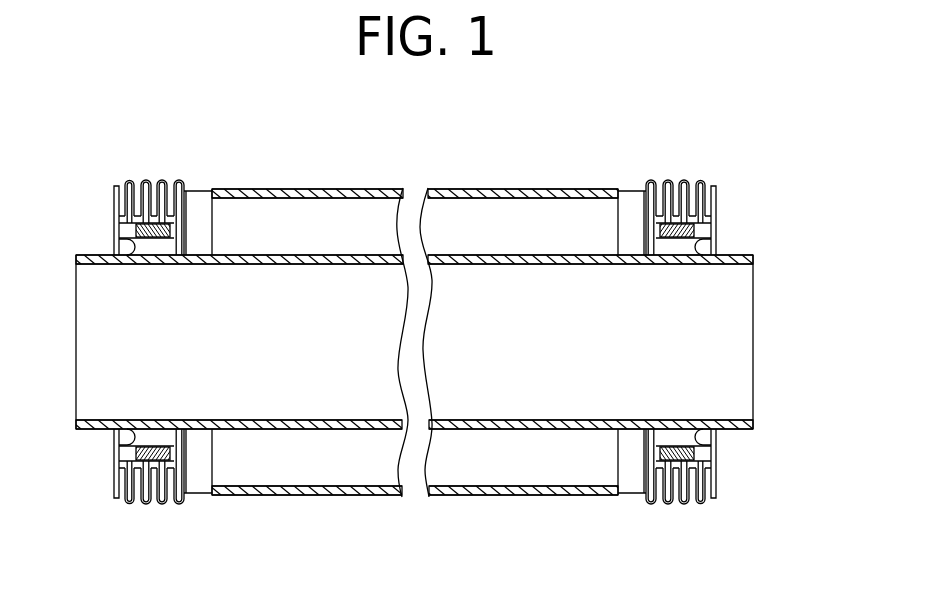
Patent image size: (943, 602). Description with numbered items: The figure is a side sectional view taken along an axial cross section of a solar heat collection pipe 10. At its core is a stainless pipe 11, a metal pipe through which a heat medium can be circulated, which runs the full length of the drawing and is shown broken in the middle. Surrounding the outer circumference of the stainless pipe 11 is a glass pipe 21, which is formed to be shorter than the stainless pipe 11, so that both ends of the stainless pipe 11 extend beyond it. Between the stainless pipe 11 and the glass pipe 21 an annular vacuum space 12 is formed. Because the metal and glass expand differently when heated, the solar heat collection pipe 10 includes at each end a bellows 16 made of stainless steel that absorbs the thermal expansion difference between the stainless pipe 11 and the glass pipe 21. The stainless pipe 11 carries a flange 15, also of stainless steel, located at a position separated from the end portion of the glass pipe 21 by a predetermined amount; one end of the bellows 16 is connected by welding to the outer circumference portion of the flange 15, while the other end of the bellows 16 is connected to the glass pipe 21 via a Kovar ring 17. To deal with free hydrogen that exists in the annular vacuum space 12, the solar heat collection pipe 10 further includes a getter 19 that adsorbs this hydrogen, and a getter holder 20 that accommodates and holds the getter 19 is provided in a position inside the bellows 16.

The solar heat collection pipe 10 is at (747, 166).
The stainless pipe 11 is at (743, 256).
The annular vacuum space 12 is at (568, 212).
The flange 15 is at (114, 221).
The bellows 16 is at (147, 180).
The Kovar ring 17 is at (194, 191).
The getter 19 is at (157, 238).
The getter holder 20 is at (167, 240).
The glass pipe 21 is at (460, 189).